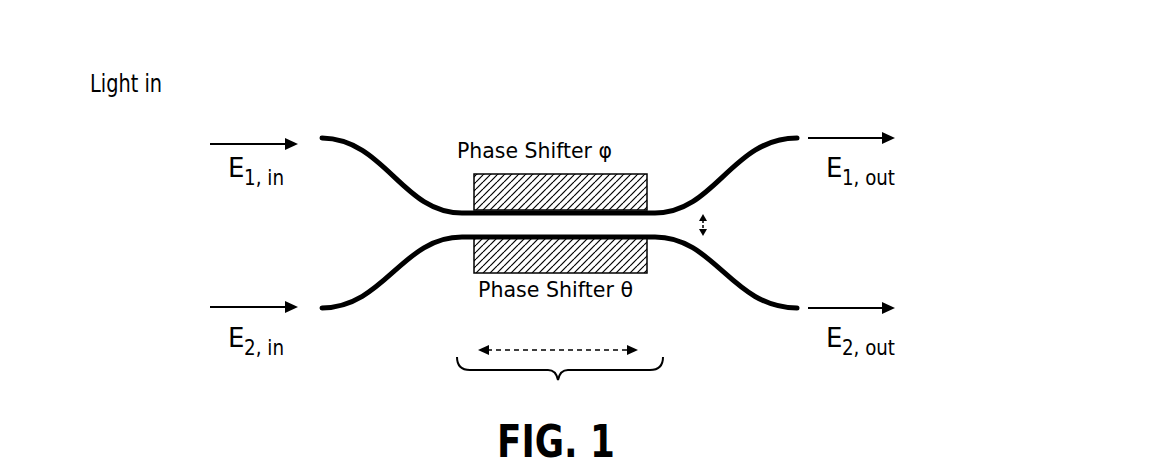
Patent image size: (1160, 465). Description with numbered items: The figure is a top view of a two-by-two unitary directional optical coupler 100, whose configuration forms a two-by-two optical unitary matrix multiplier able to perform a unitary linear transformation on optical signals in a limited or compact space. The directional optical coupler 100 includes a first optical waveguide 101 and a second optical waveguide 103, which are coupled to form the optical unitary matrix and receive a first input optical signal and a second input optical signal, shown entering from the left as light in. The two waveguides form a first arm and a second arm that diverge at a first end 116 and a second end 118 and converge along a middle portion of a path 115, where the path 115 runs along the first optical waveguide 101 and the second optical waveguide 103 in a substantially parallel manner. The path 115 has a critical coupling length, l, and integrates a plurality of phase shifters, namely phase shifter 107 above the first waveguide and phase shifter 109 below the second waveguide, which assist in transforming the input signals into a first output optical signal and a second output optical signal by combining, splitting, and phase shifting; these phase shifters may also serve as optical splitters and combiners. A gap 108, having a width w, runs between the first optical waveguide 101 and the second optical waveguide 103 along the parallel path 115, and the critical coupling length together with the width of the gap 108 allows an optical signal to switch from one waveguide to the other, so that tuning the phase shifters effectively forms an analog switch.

The 2×2 unitary directional optical coupler 100 is at (568, 216).
The first optical waveguide 101 is at (362, 135).
The second optical waveguide 103 is at (366, 308).
The phase shifter 107 is at (625, 174).
The phase shifter 109 is at (647, 262).
The gap 108 is at (705, 231).
The path 115 is at (560, 365).
The first end 116 is at (331, 107).
The second end 118 is at (763, 128).